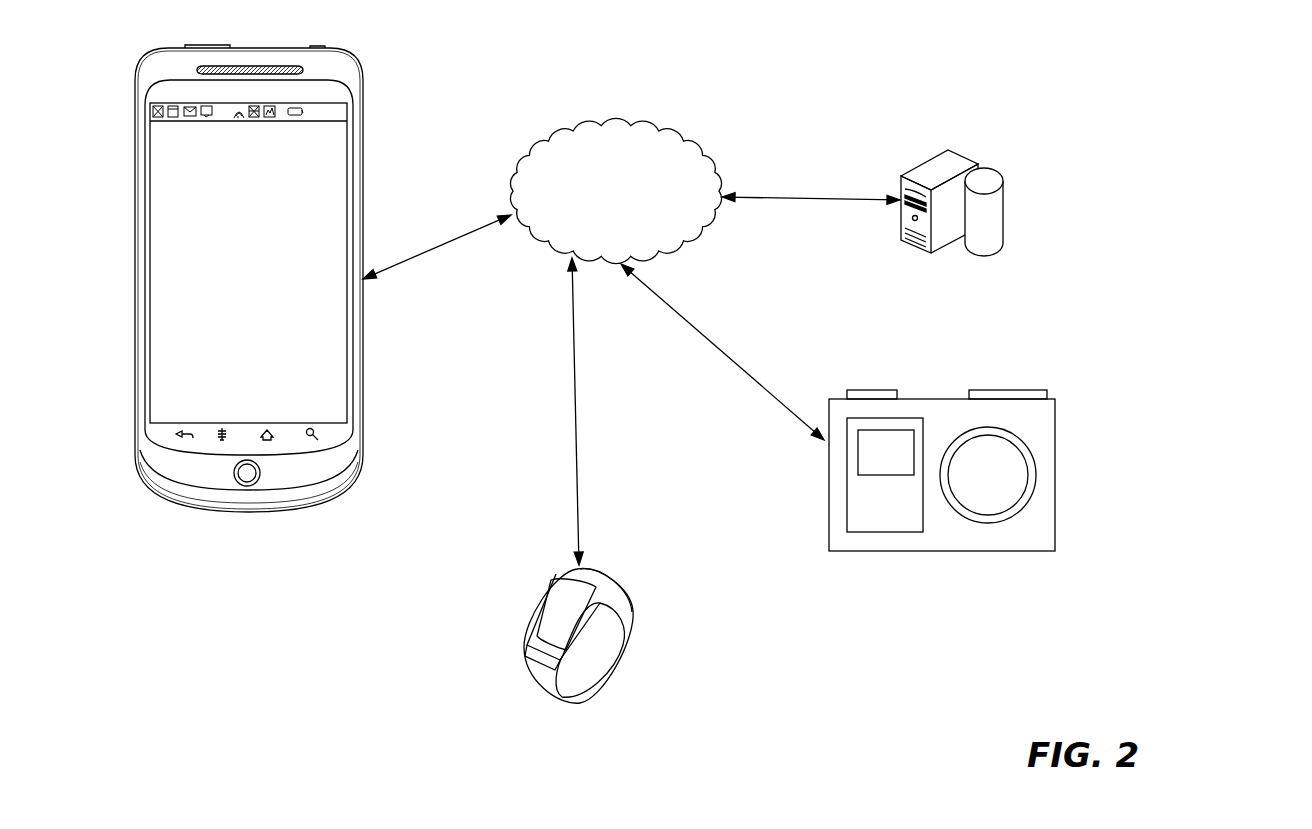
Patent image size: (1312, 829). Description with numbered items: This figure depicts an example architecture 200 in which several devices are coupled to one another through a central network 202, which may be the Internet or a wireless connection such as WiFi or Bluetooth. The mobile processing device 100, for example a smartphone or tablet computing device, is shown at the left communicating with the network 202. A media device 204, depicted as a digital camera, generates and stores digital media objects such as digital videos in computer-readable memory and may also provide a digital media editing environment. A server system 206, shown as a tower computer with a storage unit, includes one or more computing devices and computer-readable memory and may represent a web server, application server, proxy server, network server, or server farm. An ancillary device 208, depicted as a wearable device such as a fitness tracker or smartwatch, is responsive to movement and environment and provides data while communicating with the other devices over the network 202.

The mobile processing device 100 is at (362, 117).
The architecture 200 is at (1217, 142).
The network 202 is at (613, 122).
The media device 204 is at (1055, 436).
The server system 206 is at (962, 152).
The ancillary device 208 is at (628, 606).